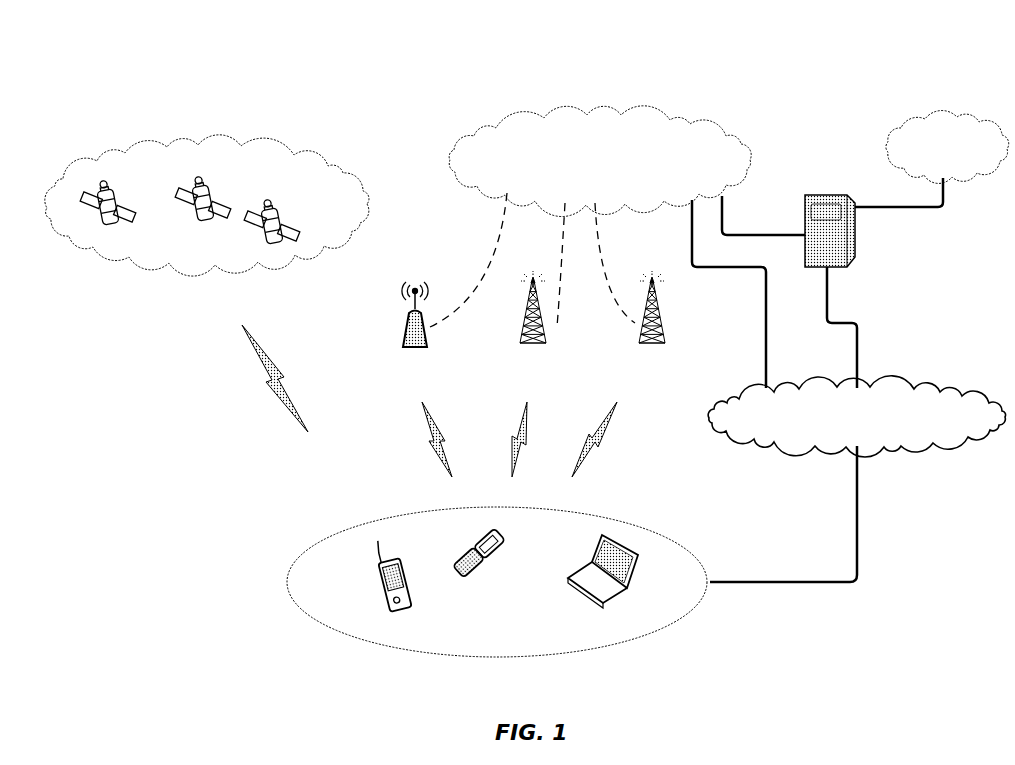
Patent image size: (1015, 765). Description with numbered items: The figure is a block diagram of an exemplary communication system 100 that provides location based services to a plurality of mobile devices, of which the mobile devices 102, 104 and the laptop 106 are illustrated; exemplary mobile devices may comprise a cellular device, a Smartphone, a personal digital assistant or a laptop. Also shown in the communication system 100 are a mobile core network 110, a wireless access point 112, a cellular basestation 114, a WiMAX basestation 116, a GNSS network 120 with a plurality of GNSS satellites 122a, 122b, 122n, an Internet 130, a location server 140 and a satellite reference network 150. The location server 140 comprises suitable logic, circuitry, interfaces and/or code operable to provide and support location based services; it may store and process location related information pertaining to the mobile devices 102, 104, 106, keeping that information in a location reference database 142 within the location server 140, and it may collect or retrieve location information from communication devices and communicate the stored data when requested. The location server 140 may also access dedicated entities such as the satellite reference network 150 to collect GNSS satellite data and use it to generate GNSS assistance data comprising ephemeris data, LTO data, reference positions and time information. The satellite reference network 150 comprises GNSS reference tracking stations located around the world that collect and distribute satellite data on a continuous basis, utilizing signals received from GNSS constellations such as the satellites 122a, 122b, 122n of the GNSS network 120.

The communication system 100 is at (936, 69).
The mobile device 102 is at (492, 566).
The mobile device 104 is at (404, 608).
The laptop 106 is at (628, 590).
The mobile core network 110 is at (589, 180).
The wireless access point 112 is at (407, 331).
The cellular basestation 114 is at (523, 331).
The WiMAX basestation 116 is at (662, 331).
The GNSS network 120 is at (59, 188).
The GNSS satellite 122a is at (116, 196).
The GNSS satellite 122b is at (211, 190).
The GNSS satellite 122n is at (282, 214).
The Internet 130 is at (845, 435).
The location server 140 is at (857, 240).
The location reference database 142 is at (817, 251).
The satellite reference network 150 is at (936, 165).